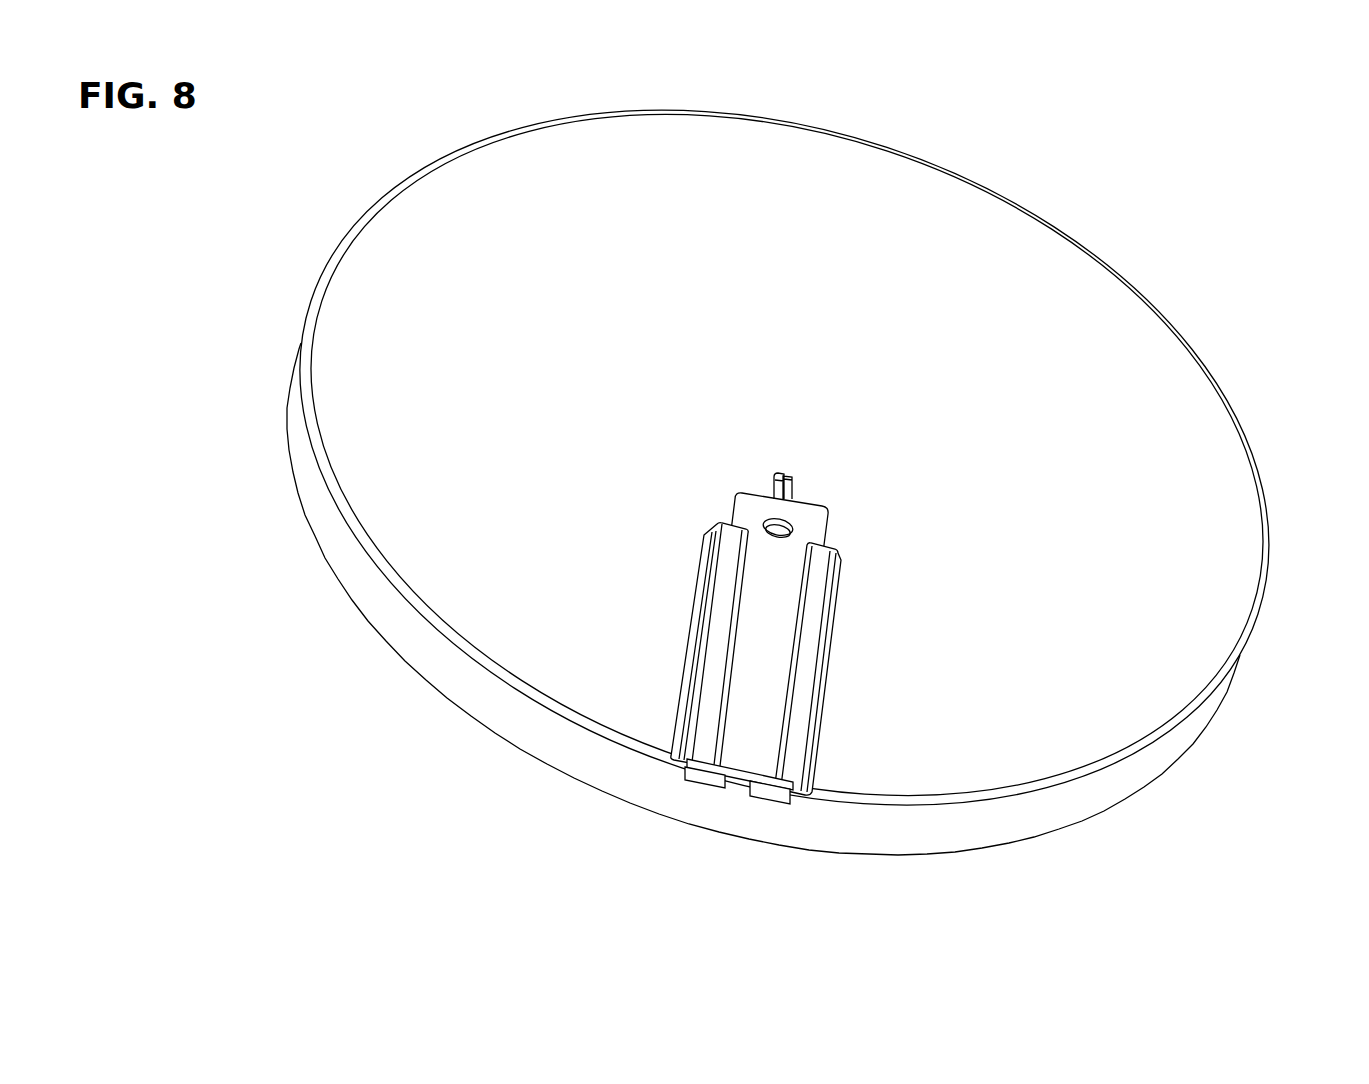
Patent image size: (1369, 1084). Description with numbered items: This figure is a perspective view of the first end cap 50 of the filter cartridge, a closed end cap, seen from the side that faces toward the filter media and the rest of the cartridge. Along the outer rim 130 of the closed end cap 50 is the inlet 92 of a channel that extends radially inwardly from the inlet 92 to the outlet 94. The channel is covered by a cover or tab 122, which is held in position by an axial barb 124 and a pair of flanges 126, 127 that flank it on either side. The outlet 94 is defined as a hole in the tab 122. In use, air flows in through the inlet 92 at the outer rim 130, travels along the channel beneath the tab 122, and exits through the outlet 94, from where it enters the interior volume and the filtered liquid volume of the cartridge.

The first end cap 50 is at (1187, 435).
The outer rim 130 is at (1055, 783).
The tab 122 is at (748, 685).
The flange 126 is at (727, 590).
The flange 127 is at (810, 655).
The inlet 92 is at (742, 783).
The outlet 94 is at (792, 521).
The axial barb 124 is at (780, 470).